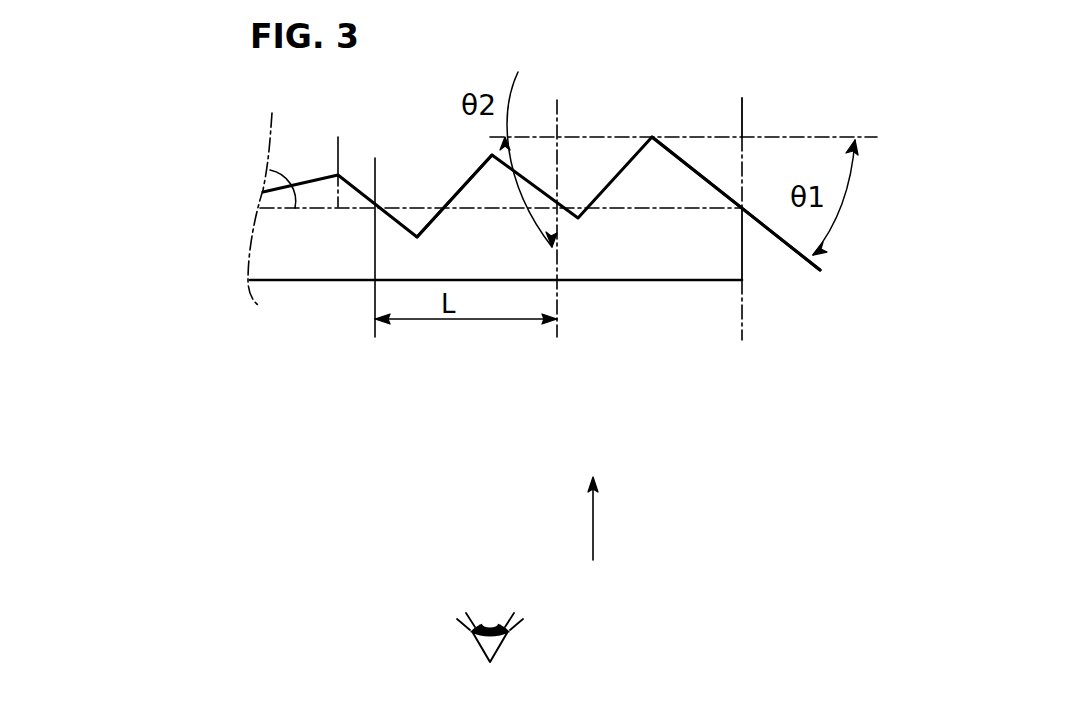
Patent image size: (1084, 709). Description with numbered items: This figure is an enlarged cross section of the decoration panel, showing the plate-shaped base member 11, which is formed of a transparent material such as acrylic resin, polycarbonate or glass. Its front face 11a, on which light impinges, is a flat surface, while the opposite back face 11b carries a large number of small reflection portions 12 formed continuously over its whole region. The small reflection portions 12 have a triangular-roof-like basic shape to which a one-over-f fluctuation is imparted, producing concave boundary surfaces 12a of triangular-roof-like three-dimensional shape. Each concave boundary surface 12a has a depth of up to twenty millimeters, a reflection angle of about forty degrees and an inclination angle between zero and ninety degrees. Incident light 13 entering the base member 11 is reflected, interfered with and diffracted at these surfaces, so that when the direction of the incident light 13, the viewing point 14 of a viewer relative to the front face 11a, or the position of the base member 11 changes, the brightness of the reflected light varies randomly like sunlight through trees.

The base member 11 is at (328, 262).
The front face 11a is at (277, 280).
The back face 11b is at (267, 165).
The small reflection portions 12 is at (620, 167).
The concave boundary surface 12a is at (440, 215).
The incident light 13 is at (593, 523).
The viewing point 14 is at (505, 645).